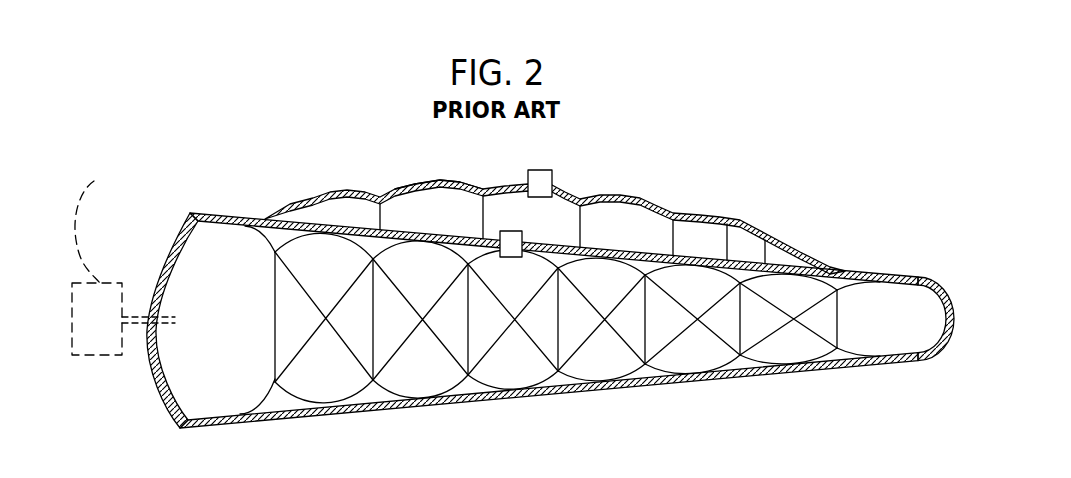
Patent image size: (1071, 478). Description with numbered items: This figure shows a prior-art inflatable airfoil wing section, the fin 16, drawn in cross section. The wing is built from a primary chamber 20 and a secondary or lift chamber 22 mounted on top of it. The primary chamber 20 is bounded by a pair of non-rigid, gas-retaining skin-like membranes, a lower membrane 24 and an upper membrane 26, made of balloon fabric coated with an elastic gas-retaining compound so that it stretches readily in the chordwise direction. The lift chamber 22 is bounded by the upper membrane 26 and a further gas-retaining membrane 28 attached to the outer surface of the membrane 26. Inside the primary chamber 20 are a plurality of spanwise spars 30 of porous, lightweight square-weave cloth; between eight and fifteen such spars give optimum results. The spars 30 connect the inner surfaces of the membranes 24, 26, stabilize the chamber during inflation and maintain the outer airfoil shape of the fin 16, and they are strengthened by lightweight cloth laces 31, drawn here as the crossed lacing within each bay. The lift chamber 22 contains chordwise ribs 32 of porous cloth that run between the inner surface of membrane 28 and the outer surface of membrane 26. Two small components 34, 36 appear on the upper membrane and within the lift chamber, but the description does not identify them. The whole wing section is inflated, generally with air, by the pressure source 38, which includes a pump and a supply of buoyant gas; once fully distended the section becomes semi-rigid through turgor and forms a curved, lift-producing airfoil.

The fin 16 is at (534, 302).
The primary chamber 20 is at (188, 392).
The secondary or lift chamber 22 is at (607, 217).
The lower membrane 24 is at (512, 396).
The upper membrane 26 is at (741, 222).
The membrane 28 is at (427, 182).
The spanwise spars 30 is at (272, 402).
The cloth laces 31 is at (275, 293).
The ribs 32 is at (380, 205).
The valve 34 is at (513, 231).
The valve 36 is at (540, 170).
The pressure source 38 is at (112, 282).